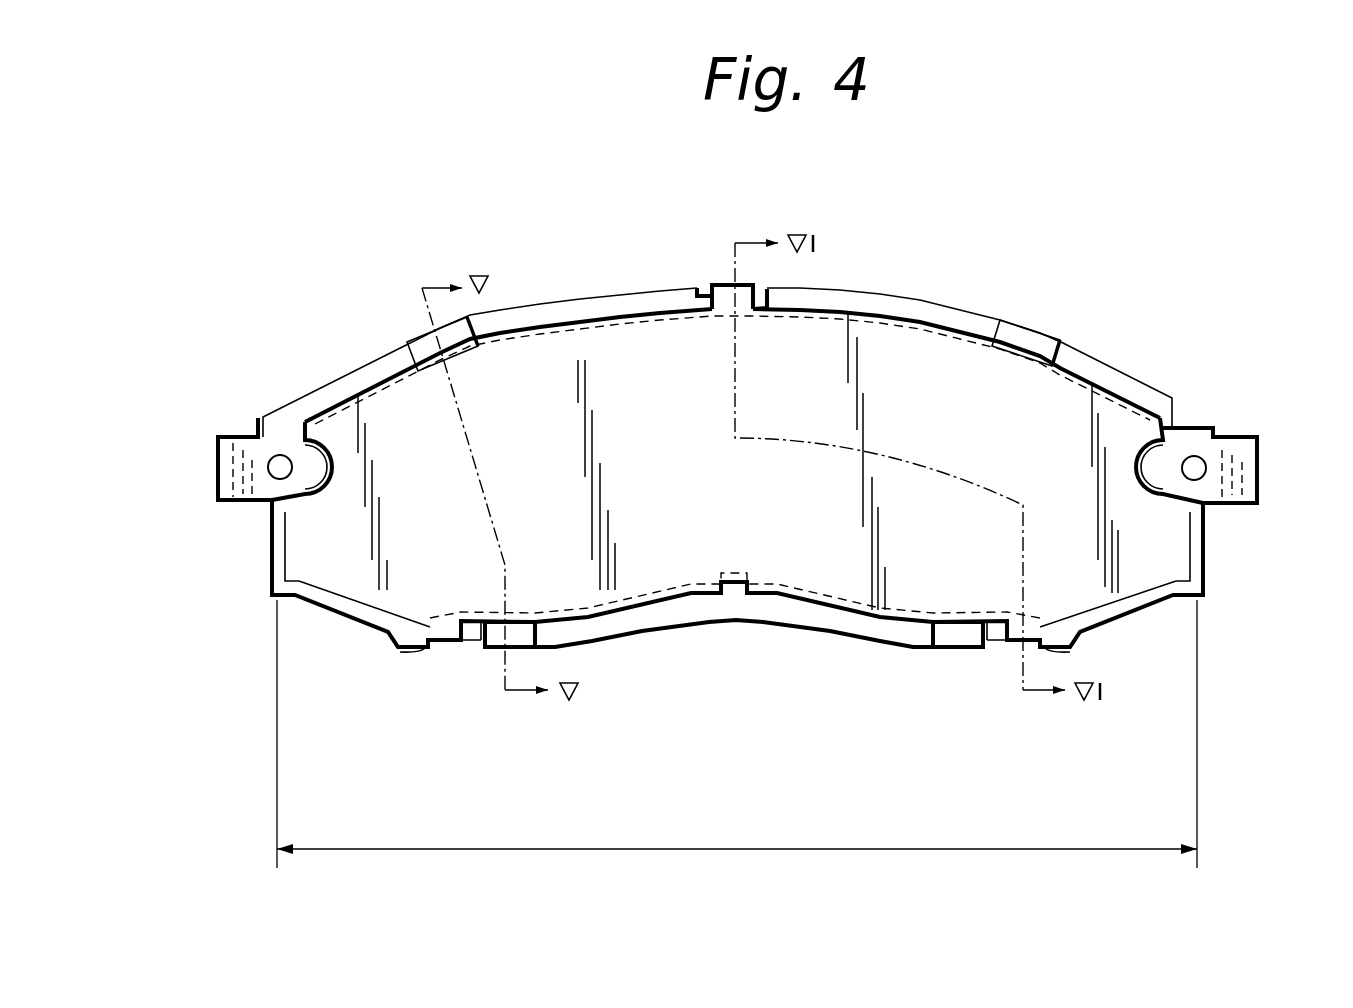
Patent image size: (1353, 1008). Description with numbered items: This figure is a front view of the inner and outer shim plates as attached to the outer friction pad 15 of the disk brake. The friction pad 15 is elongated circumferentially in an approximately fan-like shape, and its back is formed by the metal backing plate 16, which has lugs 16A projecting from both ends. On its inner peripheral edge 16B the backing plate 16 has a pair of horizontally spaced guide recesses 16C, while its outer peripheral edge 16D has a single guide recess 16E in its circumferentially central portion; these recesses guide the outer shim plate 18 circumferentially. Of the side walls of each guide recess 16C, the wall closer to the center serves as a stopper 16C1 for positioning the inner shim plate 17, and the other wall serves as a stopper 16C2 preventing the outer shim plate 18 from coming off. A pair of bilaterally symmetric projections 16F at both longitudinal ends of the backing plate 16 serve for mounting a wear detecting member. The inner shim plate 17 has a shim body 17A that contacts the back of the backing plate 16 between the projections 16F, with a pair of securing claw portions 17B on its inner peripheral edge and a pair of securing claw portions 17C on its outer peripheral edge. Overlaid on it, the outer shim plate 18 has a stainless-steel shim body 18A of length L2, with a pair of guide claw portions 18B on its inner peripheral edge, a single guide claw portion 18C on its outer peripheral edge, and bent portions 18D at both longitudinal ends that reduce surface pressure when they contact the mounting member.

The outer friction pad 15 is at (1138, 368).
The backing plate 16 is at (578, 320).
The lugs 16A is at (233, 487).
The inner peripheral edge 16B is at (736, 626).
The guide recesses 16C is at (472, 650).
The stopper 16C1 is at (535, 648).
The stopper 16C2 is at (420, 645).
The outer peripheral edge 16D is at (960, 328).
The guide recess 16E is at (697, 290).
The projections 16F is at (280, 464).
The inner shim plate 17 is at (1167, 453).
The shim body 17A is at (874, 607).
The securing claw portions 17B is at (505, 650).
The securing claw portions 17C is at (417, 350).
The outer shim plate 18 is at (535, 373).
The shim body 18A is at (823, 570).
The guide claw portions 18B is at (443, 655).
The guide claw portion 18C is at (721, 283).
The bent portions 18D is at (272, 558).
The length of shim body L2 is at (737, 734).